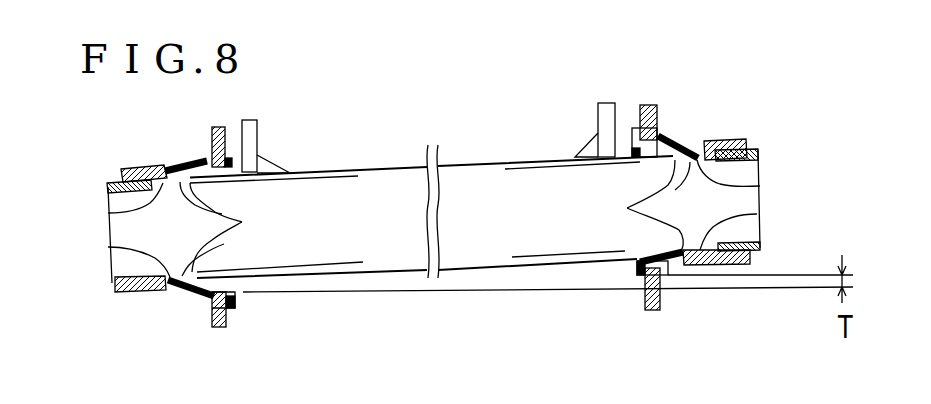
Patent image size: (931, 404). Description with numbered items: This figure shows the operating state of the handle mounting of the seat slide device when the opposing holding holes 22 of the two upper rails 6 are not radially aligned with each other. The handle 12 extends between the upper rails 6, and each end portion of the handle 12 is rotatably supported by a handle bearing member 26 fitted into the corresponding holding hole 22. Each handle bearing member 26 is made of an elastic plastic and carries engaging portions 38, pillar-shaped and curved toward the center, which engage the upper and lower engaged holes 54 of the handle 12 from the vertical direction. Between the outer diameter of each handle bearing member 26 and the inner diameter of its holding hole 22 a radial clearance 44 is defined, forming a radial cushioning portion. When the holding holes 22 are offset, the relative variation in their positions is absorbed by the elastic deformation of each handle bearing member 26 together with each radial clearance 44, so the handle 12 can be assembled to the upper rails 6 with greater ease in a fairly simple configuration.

The handle 12 is at (389, 168).
The holding hole 22 is at (257, 157).
The handle bearing member 26 is at (174, 310).
The engaging portion 38 is at (110, 247).
The radial clearance 44 is at (210, 162).
The engaged hole 54 is at (436, 216).
The upper rail 6 is at (232, 328).